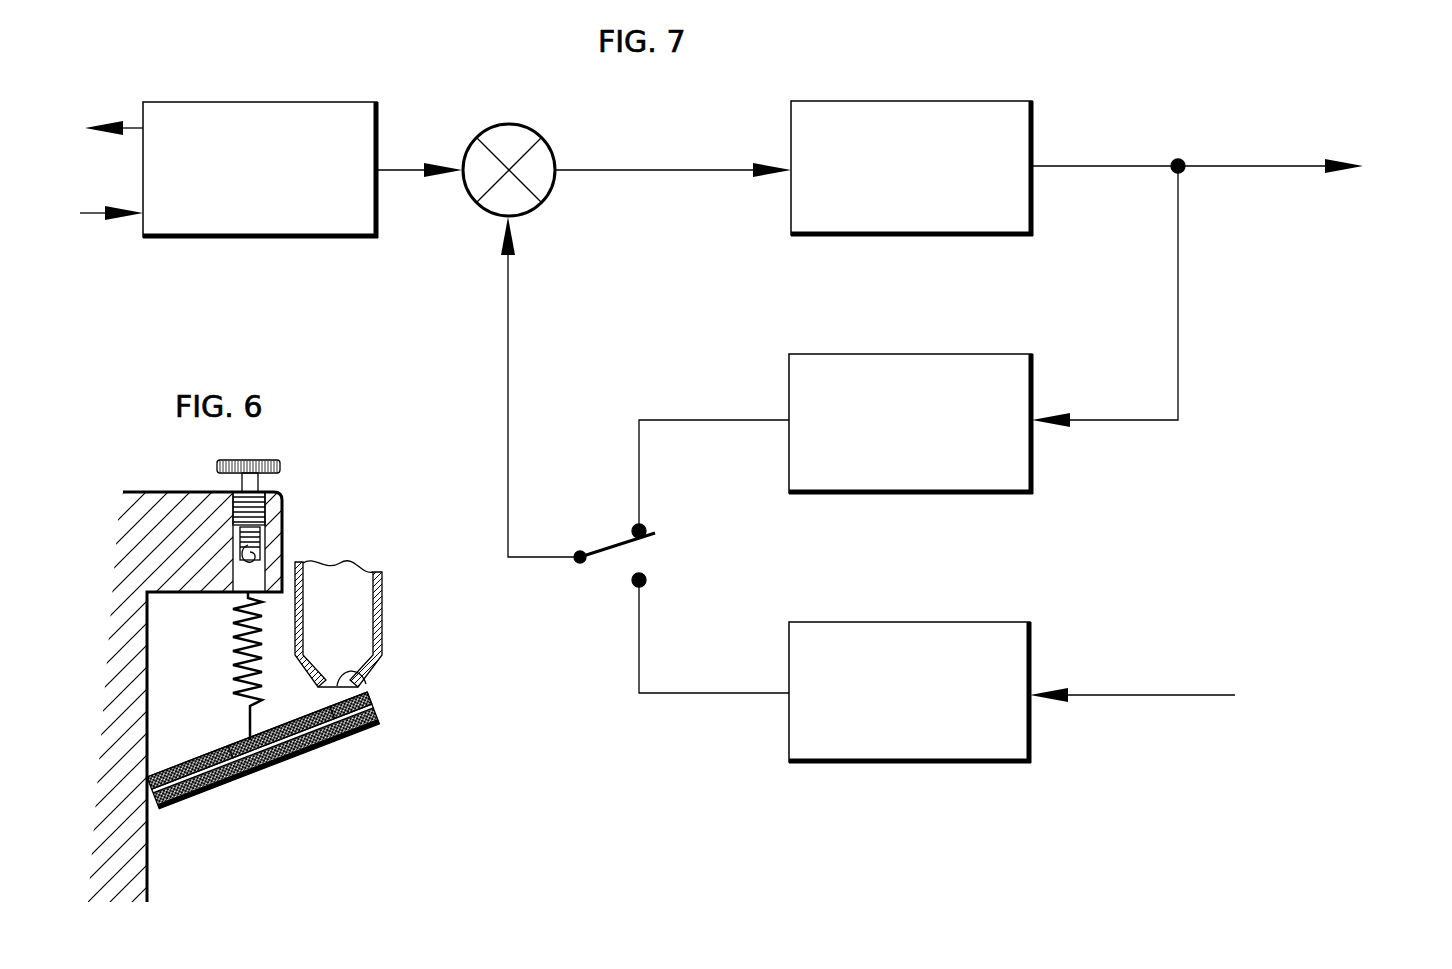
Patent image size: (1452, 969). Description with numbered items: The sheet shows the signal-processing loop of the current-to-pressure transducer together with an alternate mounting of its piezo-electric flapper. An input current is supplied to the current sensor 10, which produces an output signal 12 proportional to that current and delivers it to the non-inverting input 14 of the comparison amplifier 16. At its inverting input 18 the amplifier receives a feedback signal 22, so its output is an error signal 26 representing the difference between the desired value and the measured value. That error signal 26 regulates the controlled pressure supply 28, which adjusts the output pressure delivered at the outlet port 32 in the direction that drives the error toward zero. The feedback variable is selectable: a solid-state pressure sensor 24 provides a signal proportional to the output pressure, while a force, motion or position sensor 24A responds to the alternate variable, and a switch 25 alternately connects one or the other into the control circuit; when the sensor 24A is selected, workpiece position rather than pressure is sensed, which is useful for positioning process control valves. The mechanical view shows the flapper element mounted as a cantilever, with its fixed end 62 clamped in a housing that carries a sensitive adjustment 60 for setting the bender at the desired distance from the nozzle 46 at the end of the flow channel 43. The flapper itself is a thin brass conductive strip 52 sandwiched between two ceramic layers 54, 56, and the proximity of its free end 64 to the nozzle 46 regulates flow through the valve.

In FIG. 7, the current sensor 10 is at (257, 212).
In FIG. 7, the output signal 12 is at (402, 162).
In FIG. 7, the non-inverting input 14 is at (465, 190).
In FIG. 7, the comparison amplifier 16 is at (524, 110).
In FIG. 7, the inverting input 18 is at (537, 207).
In FIG. 7, the feedback signal 22 is at (538, 557).
In FIG. 7, the solid-state pressure sensor 24 is at (1013, 483).
In FIG. 7, the force, motion or position sensor 24A is at (840, 748).
In FIG. 7, the switch 25 is at (616, 545).
In FIG. 7, the error signal 26 is at (665, 168).
In FIG. 7, the controlled pressure supply 28 is at (1020, 108).
In FIG. 7, the outlet port 32 is at (1295, 165).
In FIG. 6, the flow channel 43 is at (382, 580).
In FIG. 6, the nozzle 46 is at (360, 675).
In FIG. 6, the brass conductive strip 52 is at (333, 740).
In FIG. 6, the ceramic layer 54 is at (225, 762).
In FIG. 6, the ceramic layer 56 is at (302, 758).
In FIG. 6, the sensitive adjustment 60 is at (305, 470).
In FIG. 6, the fixed end 62 is at (150, 815).
In FIG. 6, the free end 64 is at (378, 718).